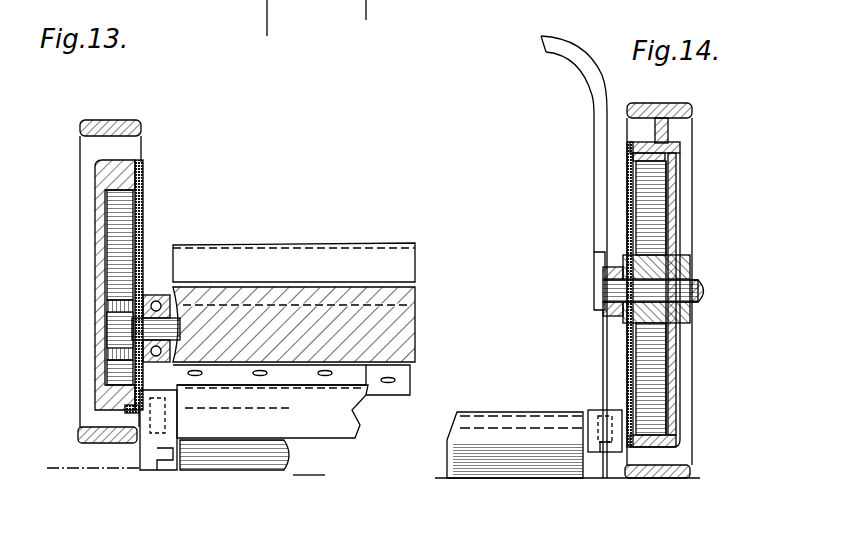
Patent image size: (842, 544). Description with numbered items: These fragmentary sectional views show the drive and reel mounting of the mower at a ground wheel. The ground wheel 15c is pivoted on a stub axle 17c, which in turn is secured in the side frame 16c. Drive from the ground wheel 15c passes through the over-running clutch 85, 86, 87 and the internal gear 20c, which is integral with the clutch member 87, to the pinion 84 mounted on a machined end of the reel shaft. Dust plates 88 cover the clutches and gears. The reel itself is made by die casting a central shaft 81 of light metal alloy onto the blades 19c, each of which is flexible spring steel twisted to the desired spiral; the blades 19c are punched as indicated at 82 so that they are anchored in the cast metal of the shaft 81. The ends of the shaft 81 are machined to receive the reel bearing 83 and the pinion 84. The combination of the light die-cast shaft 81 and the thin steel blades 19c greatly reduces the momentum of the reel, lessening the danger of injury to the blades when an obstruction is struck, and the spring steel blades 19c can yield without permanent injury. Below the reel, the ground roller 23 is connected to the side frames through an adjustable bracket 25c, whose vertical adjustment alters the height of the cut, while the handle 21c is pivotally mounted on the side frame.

In FIG. 13, the ground wheel 15c is at (143, 127).
In FIG. 14, the ground wheel 15c is at (690, 118).
In FIG. 14, the side frame 16c is at (600, 262).
In FIG. 14, the stub axle 17c is at (698, 282).
In FIG. 13, the blade 19c is at (412, 265).
In FIG. 13, the internal gear 20c is at (133, 213).
In FIG. 14, the internal gear 20c is at (640, 206).
In FIG. 14, the arm 21c is at (596, 103).
In FIG. 13, the ground roller 23 is at (252, 468).
In FIG. 14, the ground roller 23 is at (505, 468).
In FIG. 13, the bracket 25c is at (171, 462).
In FIG. 13, the central shaft 81 is at (405, 320).
In FIG. 13, the punched opening 82 is at (392, 382).
In FIG. 13, the reel bearing 83 is at (148, 292).
In FIG. 13, the pinion 84 is at (118, 322).
In FIG. 13, the over-running clutch member 85 is at (120, 409).
In FIG. 14, the over-running clutch member 85 is at (660, 150).
In FIG. 13, the over-running clutch member 86 is at (100, 272).
In FIG. 14, the over-running clutch member 86 is at (672, 172).
In FIG. 14, the clutch member 87 is at (674, 405).
In FIG. 13, the dust plate 88 is at (143, 199).
In FIG. 14, the dust plate 88 is at (627, 223).